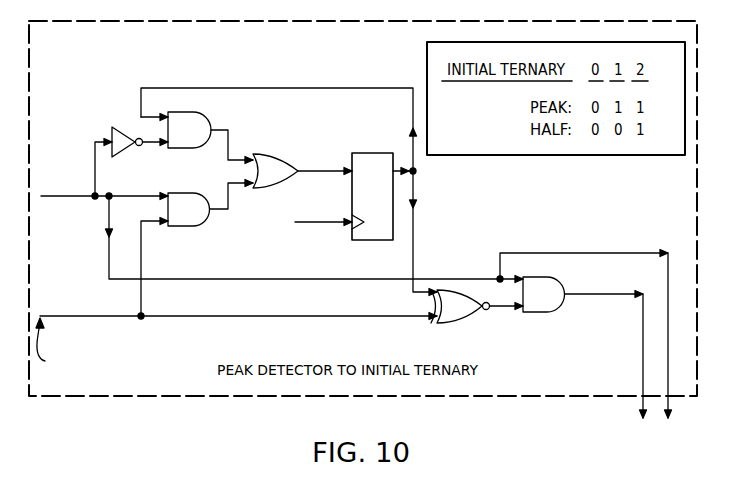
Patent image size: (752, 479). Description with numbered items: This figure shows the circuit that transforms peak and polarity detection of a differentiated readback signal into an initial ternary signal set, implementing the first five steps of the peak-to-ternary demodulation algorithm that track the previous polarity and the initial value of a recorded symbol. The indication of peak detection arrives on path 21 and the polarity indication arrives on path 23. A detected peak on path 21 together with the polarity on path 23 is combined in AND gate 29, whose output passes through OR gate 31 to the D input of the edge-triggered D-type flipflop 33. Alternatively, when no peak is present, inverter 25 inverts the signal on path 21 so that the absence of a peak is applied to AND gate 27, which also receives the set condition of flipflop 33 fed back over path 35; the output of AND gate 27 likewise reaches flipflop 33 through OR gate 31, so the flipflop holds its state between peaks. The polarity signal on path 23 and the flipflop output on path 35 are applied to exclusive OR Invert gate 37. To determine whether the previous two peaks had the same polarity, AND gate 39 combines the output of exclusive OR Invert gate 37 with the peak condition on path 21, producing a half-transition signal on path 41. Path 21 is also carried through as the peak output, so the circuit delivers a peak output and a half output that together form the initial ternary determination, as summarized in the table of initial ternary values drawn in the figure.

The peak path 21 is at (84, 199).
The polarity path 23 is at (125, 317).
The inverter 25 is at (125, 125).
The AND gate 27 is at (203, 115).
The AND gate 29 is at (181, 193).
The OR gate 31 is at (260, 153).
The flipflop 33 is at (376, 152).
The path 35 is at (416, 171).
The exclusive OR Invert gate 37 is at (471, 323).
The AND gate 39 is at (563, 312).
The path 41 is at (643, 336).